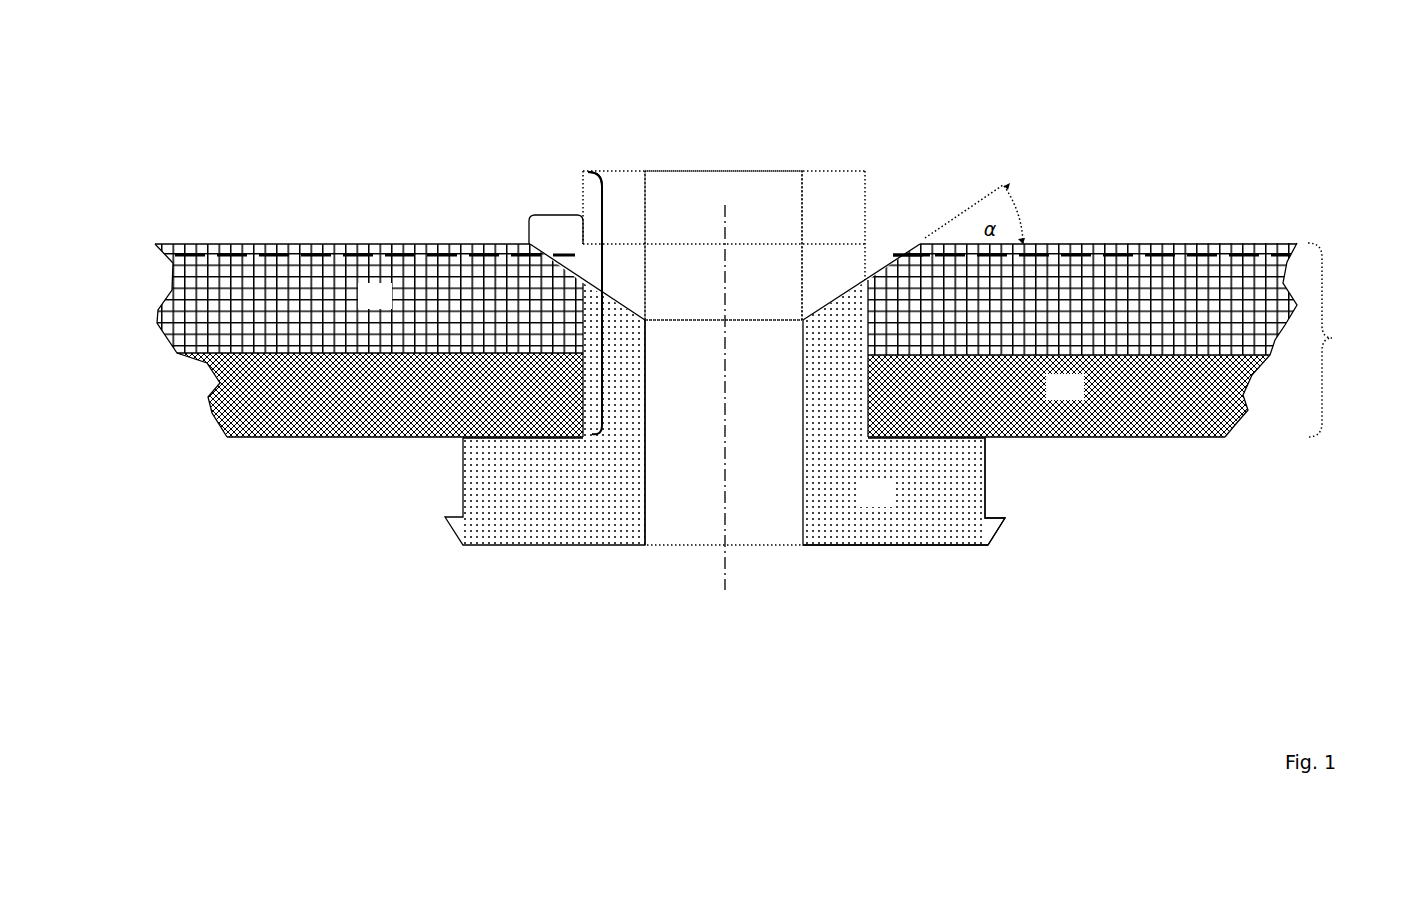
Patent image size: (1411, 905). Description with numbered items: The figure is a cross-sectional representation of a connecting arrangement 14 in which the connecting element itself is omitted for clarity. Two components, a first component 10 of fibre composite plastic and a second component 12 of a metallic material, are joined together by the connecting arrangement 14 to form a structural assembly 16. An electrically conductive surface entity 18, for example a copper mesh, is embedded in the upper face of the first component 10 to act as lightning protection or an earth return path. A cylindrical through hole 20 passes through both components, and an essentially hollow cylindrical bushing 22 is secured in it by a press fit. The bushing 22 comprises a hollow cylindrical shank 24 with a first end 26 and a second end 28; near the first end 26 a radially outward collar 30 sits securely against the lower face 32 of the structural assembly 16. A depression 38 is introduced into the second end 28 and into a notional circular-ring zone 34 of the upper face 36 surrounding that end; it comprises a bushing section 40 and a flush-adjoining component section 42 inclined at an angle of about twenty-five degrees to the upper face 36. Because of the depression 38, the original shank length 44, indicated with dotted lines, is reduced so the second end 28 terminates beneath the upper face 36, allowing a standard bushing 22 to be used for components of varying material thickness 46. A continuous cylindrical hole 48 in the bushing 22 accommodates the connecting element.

The first component 10 is at (363, 309).
The second component 12 is at (1053, 399).
The connecting arrangement 14 is at (665, 122).
The structural assembly 16 is at (142, 328).
The electrically conductive surface entity 18 is at (333, 250).
The cylindrical through hole 20 is at (873, 315).
The bushing 22 is at (866, 506).
The hollow cylindrical shank 24 is at (630, 395).
The first end 26 is at (945, 557).
The second end 28 is at (567, 312).
The collar 30 is at (963, 497).
The lower face 32 is at (300, 438).
The notional zone 34 is at (555, 215).
The upper face 36 is at (222, 243).
The depression 38 is at (832, 203).
The bushing section 40 is at (830, 302).
The component section 42 is at (893, 262).
The original shank length 44 is at (609, 217).
The material thickness 46 is at (1335, 340).
The continuous cylindrical hole 48 is at (650, 495).